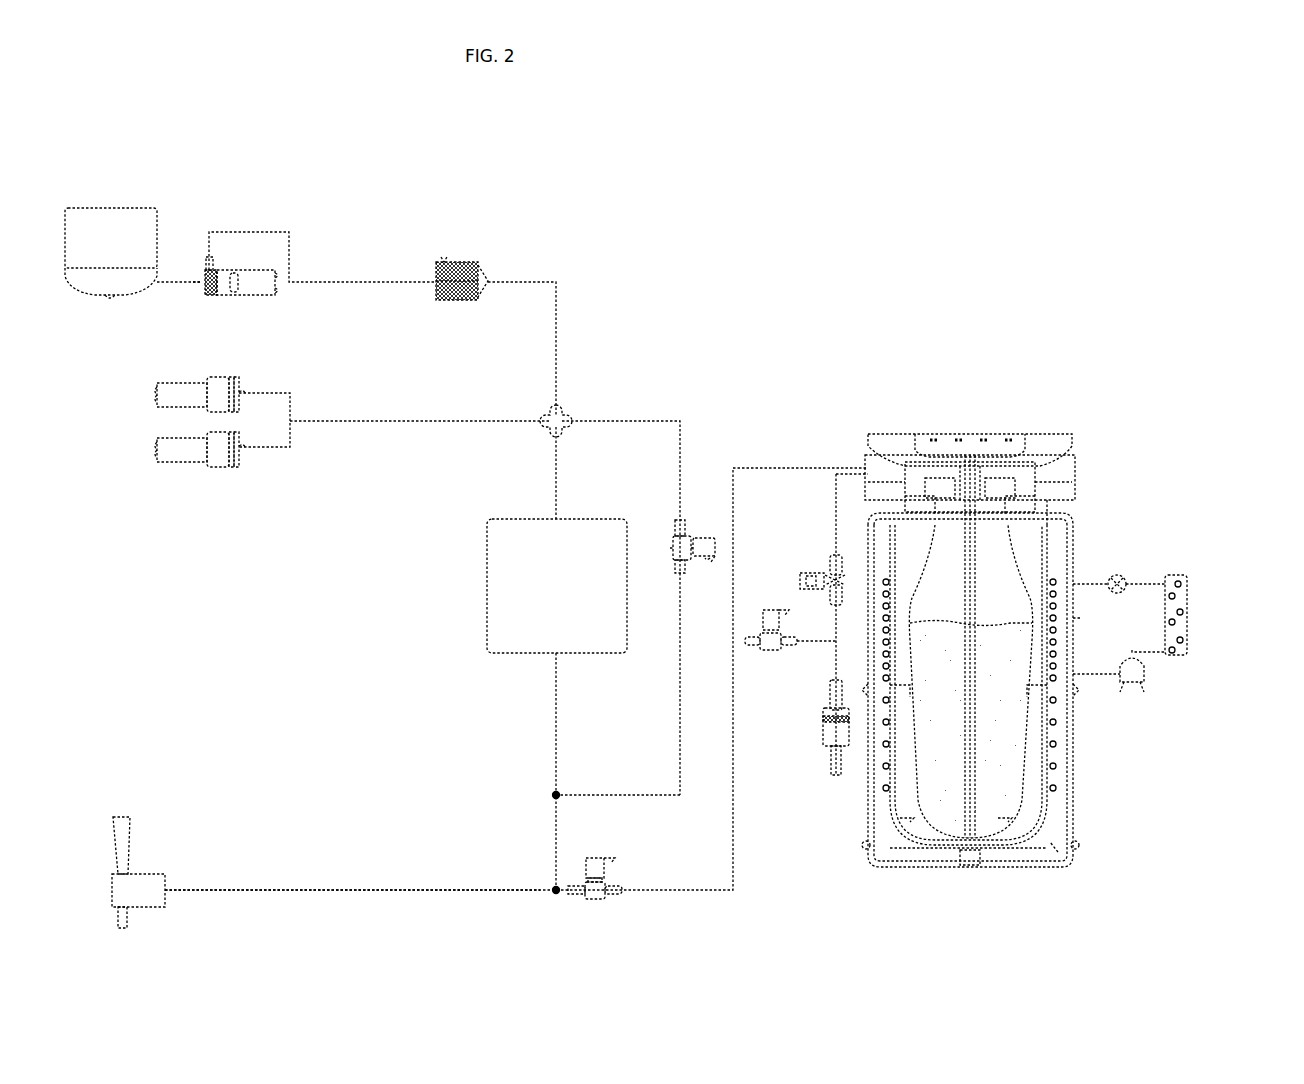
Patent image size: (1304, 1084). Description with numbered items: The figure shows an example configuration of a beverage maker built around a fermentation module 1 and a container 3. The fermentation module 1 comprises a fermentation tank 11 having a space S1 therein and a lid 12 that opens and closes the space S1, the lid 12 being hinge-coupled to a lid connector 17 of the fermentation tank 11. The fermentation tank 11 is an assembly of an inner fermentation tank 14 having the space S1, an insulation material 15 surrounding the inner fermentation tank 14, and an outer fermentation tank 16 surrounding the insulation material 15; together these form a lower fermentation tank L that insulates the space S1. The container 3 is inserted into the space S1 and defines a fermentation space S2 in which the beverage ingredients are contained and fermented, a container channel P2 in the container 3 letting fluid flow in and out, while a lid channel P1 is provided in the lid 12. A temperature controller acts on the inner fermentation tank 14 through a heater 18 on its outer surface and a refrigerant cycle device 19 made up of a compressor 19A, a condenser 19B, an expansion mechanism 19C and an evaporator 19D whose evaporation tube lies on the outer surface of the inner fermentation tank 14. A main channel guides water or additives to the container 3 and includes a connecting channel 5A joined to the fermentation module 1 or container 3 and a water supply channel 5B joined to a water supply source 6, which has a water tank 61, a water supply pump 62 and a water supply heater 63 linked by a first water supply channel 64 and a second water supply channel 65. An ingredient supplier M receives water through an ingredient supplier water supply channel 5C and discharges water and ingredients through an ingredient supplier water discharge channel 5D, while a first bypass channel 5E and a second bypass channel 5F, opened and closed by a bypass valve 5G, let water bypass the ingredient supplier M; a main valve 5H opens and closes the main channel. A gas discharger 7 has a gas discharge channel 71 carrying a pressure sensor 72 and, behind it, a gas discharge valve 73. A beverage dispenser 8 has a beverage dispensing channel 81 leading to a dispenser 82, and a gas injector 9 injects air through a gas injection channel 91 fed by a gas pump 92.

The fermentation module 1 is at (1077, 388).
The container 3 is at (1038, 729).
The connecting channel 5A is at (680, 890).
The water supply channel 5B is at (556, 318).
The ingredient supplier water supply channel 5C is at (556, 468).
The ingredient supplier water discharge channel 5D is at (556, 712).
The first bypass channel 5E is at (680, 421).
The second bypass channel 5F is at (645, 795).
The bypass valve 5G is at (705, 538).
The main valve 5H is at (595, 898).
The water supply source 6 is at (318, 176).
The gas discharger 7 is at (806, 680).
The beverage dispenser 8 is at (222, 814).
The gas injector 9 is at (258, 500).
The fermentation tank 11 is at (1120, 816).
The lid 12 is at (889, 427).
The inner fermentation tank 14 is at (1020, 848).
The insulation material 15 is at (1050, 858).
The outer fermentation tank 16 is at (1066, 828).
The lid connector 17 is at (1076, 482).
The heater 18 is at (1052, 758).
The refrigerant cycle device 19 is at (1207, 712).
The compressor 19A is at (1142, 678).
The condenser 19B is at (1188, 598).
The expansion mechanism 19C is at (1117, 575).
The evaporator 19D is at (1073, 621).
The water tank 61 is at (108, 208).
The water supply pump 62 is at (252, 295).
The water supply heater 63 is at (465, 262).
The first water supply channel 64 is at (170, 282).
The second water supply channel 65 is at (378, 282).
The gas discharge channel 71 is at (836, 513).
The pressure sensor 72 is at (815, 575).
The gas discharge valve 73 is at (768, 650).
The beverage dispensing channel 81 is at (445, 890).
The dispenser 82 is at (148, 866).
The gas injection channel 91 is at (368, 421).
The ingredient capsule 92 is at (193, 462).
The ingredient supplier M is at (470, 588).
The lid channel P1 is at (985, 462).
The container channel P2 is at (1060, 524).
The space S1 is at (907, 822).
The fermentation space S2 is at (1005, 822).
The lower fermentation tank L is at (1084, 858).